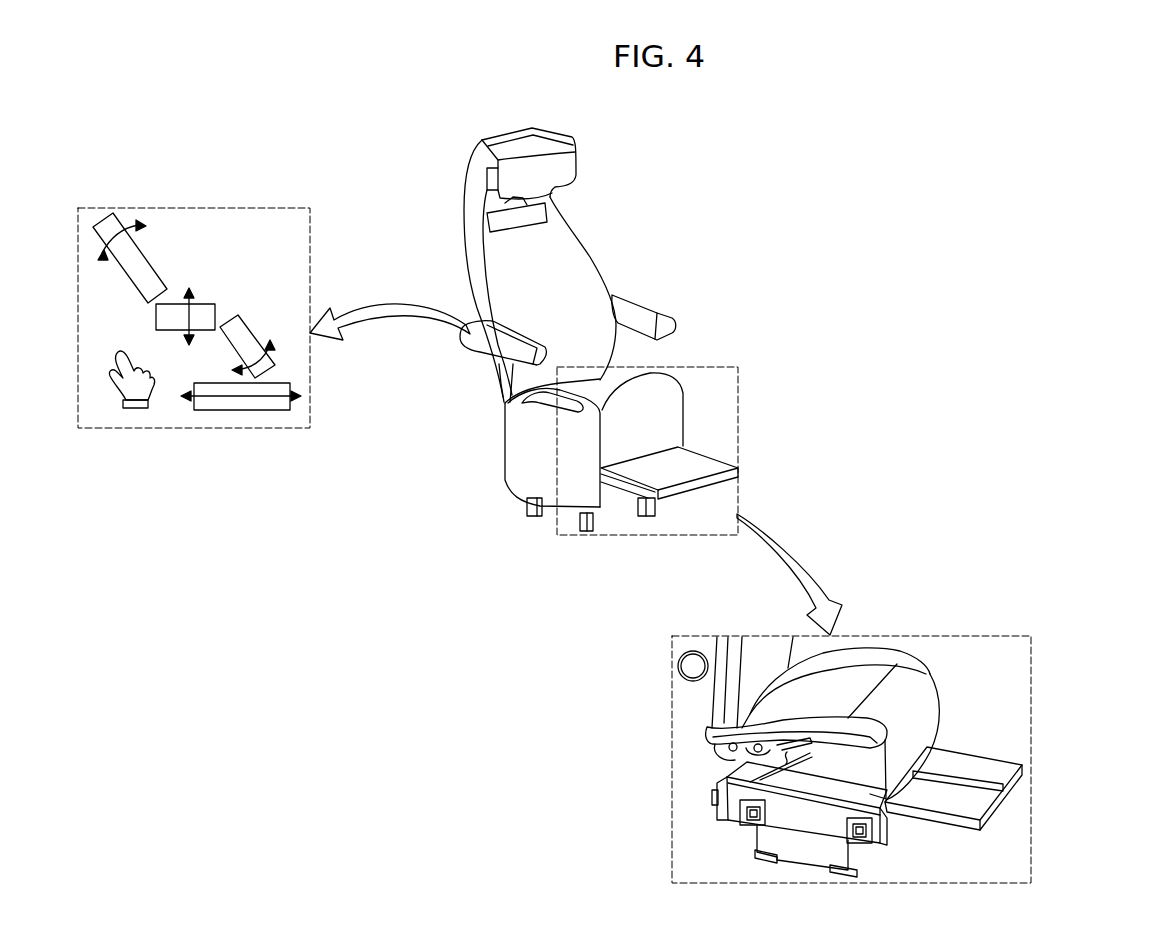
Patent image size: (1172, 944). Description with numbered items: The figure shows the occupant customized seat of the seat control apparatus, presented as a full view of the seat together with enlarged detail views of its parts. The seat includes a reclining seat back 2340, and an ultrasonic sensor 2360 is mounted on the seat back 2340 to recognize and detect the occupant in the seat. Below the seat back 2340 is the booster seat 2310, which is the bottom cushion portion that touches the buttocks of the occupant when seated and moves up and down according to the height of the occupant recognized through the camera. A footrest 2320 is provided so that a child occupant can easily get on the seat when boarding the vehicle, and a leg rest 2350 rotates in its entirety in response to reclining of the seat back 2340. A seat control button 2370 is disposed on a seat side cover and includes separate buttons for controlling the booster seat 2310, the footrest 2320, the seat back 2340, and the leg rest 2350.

The booster seat 2310 is at (873, 678).
The footrest 2320 is at (977, 755).
The seat back 2340 is at (567, 272).
The leg rest 2350 is at (928, 725).
The ultrasonic sensor 2360 is at (552, 194).
The seat control button 2370 is at (505, 400).